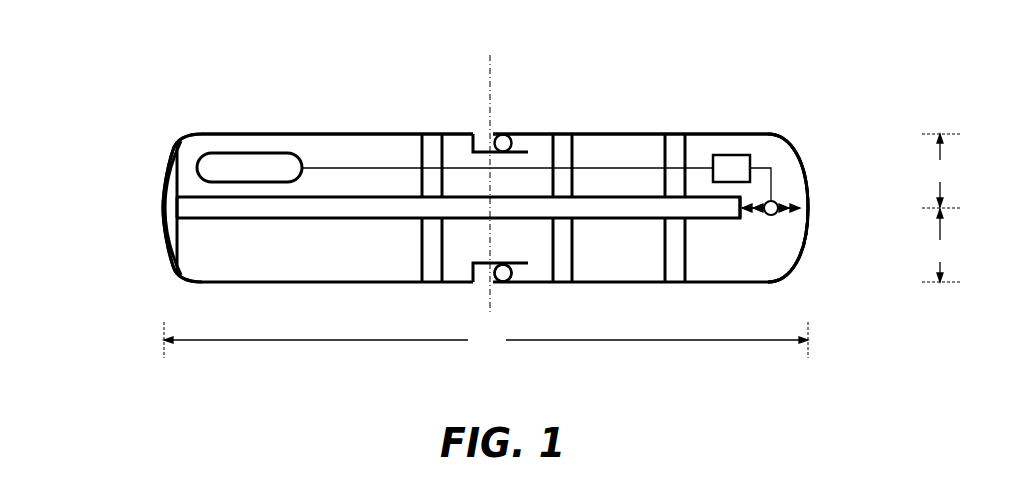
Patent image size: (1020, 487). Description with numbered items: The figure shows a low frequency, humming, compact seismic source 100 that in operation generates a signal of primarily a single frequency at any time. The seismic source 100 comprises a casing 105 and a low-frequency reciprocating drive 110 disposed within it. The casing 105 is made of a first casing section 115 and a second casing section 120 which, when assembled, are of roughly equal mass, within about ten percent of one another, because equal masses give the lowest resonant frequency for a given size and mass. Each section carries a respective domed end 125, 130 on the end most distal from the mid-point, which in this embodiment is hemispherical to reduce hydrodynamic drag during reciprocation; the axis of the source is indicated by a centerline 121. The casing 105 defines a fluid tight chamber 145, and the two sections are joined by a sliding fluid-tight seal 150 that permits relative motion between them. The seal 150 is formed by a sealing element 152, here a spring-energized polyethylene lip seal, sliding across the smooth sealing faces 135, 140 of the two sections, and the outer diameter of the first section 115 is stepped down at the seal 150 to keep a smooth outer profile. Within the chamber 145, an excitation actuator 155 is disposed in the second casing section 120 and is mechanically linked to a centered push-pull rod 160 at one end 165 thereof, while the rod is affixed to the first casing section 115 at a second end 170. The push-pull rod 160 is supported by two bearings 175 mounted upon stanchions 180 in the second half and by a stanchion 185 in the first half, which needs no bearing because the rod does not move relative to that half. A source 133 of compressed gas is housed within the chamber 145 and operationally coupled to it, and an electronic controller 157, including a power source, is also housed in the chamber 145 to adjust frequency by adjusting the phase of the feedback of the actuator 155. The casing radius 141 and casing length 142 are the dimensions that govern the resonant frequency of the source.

The seismic source 100 is at (116, 33).
The casing 105 is at (190, 108).
The low-frequency reciprocating drive 110 is at (778, 160).
The first casing section 115 is at (338, 133).
The second casing section 120 is at (627, 133).
The centerline 121 is at (490, 65).
The domed end 125 is at (166, 228).
The domed end 130 is at (810, 232).
The source of compressed gas 133 is at (203, 155).
The sealing face 135 is at (512, 281).
The sealing face 140 is at (494, 263).
The casing radius 141 is at (941, 208).
The casing length 142 is at (486, 340).
The fluid tight chamber 145 is at (502, 190).
The sliding fluid-tight seal 150 is at (502, 96).
The sealing element 152 is at (493, 138).
The excitation actuator 155 is at (769, 216).
The electronic controller 157 is at (732, 153).
The push-pull rod 160 is at (307, 220).
The first end of push-pull rod 165 is at (724, 219).
The second end of push-pull rod 170 is at (182, 220).
The bearings 175 is at (663, 193).
The stanchions 180 is at (575, 150).
The stanchion 185 is at (422, 265).